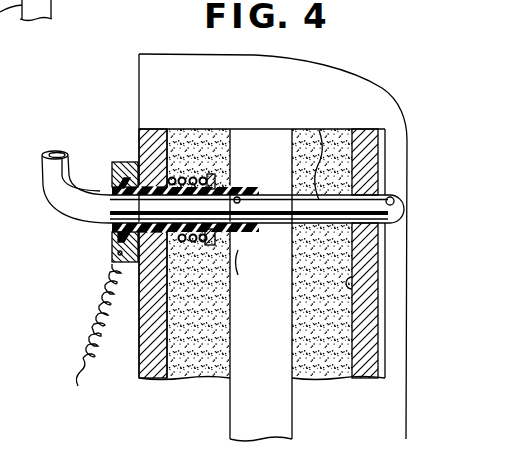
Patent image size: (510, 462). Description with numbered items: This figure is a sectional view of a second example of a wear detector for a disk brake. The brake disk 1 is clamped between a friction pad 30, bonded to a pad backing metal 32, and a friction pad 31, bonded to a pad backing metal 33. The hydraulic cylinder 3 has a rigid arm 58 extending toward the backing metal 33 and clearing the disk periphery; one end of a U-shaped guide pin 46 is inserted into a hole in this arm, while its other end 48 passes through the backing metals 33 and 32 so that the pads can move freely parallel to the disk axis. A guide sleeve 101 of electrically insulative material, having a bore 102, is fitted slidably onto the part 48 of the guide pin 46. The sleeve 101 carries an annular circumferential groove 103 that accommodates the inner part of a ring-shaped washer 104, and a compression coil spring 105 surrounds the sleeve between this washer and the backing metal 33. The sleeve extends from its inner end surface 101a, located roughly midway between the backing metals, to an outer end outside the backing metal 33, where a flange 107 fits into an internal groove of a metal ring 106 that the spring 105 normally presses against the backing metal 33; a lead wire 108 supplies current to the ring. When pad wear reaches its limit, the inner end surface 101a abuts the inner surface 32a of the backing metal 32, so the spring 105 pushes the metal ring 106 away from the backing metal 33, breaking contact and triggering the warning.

The brake disk 1 is at (237, 420).
The hydraulic cylinder 3 is at (139, 86).
The friction pad 30 is at (315, 366).
The friction pad 31 is at (205, 366).
The pad backing metal 32 is at (366, 366).
The inner surface of backing metal 32a is at (352, 283).
The pad backing metal 33 is at (136, 380).
The guide pin 46 is at (58, 193).
The other end of guide pin 48 is at (320, 149).
The rigid arm 58 is at (302, 101).
The guide sleeve 101 is at (252, 275).
The inner end surface of guide sleeve 101a is at (263, 232).
The bore 102 is at (239, 197).
The annular circumferential groove 103 is at (210, 245).
The ring-shaped washer 104 is at (211, 172).
The compression coil spring 105 is at (183, 177).
The metal ring 106 is at (118, 162).
The flange 107 is at (112, 241).
The lead wire 108 is at (78, 386).